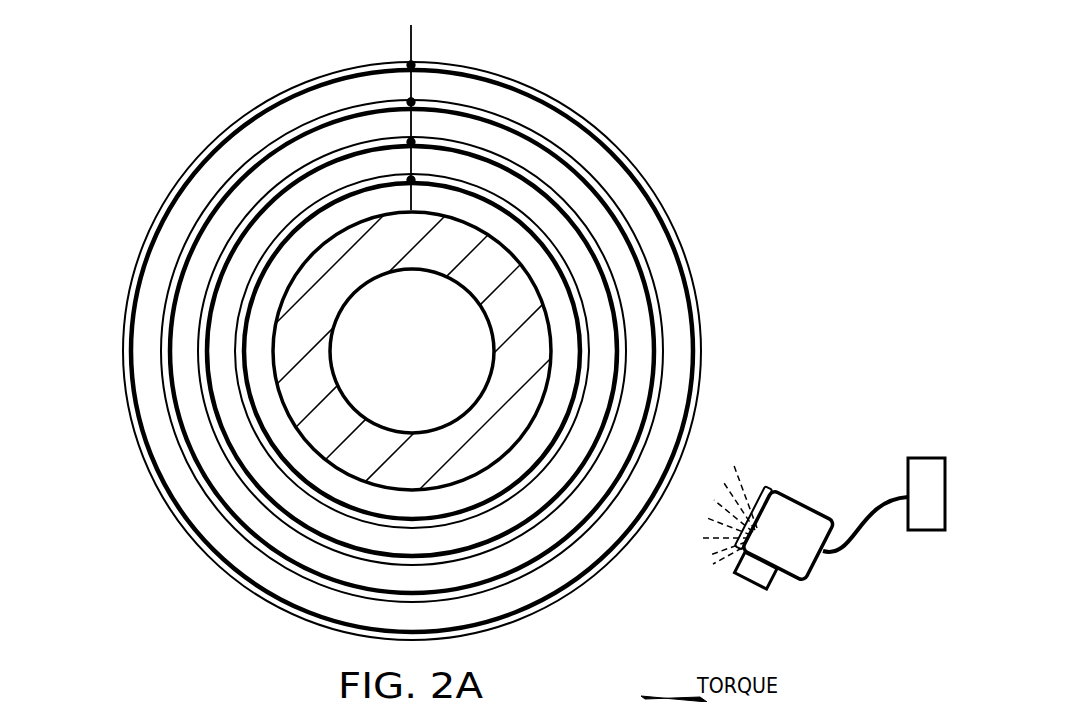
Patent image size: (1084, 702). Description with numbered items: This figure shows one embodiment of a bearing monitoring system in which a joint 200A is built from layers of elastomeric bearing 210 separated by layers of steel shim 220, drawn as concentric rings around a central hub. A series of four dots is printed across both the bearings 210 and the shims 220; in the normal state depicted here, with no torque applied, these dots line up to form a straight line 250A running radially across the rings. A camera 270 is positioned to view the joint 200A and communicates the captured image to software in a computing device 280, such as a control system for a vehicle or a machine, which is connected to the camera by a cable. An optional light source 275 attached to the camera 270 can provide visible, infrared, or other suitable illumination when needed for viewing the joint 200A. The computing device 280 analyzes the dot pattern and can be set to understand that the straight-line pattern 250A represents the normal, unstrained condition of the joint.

The joint 200A is at (408, 343).
The elastomeric bearing 210 is at (205, 243).
The steel shim 220 is at (640, 182).
The straight line 250A is at (410, 35).
The camera 270 is at (803, 502).
The light source 275 is at (773, 581).
The computing device 280 is at (928, 458).